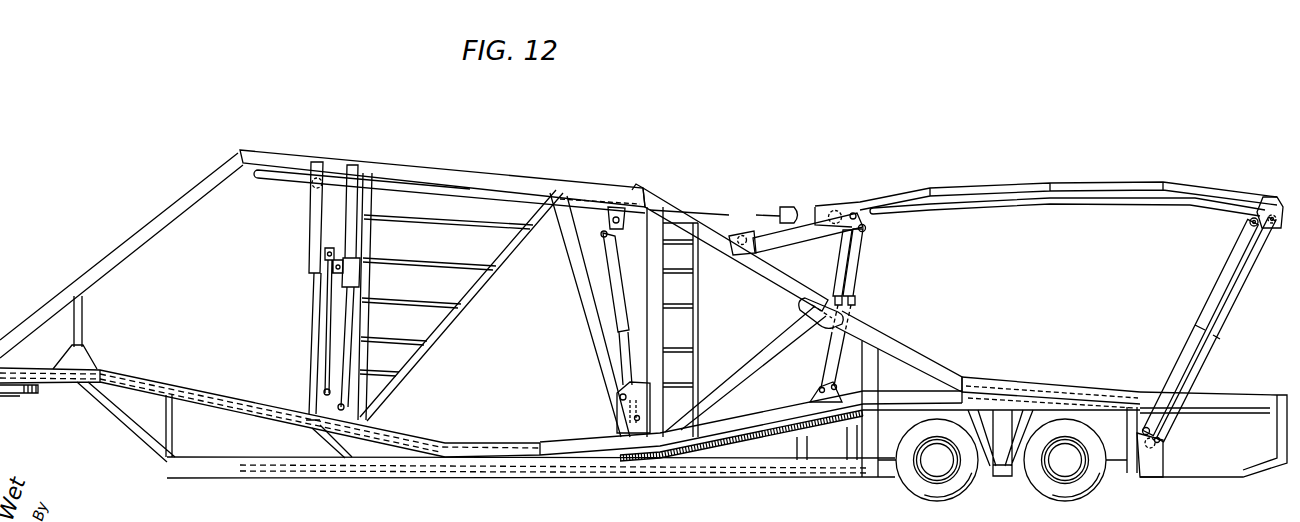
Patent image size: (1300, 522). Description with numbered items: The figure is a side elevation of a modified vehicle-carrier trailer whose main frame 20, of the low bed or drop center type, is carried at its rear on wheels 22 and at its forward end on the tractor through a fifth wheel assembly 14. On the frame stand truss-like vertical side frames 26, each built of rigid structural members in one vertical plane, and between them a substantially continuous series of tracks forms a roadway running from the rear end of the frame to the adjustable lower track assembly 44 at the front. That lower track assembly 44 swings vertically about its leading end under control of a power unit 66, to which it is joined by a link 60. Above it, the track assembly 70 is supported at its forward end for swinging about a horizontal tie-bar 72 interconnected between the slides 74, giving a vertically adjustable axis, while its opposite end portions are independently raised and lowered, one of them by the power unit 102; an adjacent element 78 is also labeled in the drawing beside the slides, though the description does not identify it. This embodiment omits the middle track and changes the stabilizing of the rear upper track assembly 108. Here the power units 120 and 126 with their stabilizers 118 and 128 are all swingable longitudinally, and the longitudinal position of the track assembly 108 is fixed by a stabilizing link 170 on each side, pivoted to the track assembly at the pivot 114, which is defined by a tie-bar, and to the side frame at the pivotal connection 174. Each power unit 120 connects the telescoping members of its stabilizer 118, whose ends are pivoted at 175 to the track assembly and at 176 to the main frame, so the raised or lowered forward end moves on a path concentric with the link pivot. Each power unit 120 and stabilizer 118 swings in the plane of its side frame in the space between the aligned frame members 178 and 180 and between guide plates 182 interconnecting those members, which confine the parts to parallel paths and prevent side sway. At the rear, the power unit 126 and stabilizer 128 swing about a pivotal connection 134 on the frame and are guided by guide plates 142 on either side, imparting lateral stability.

The fifth wheel assembly 14 is at (17, 395).
The main frame 20 is at (830, 478).
The wheels 22 is at (1043, 491).
The side frames 26 is at (685, 213).
The adjustable lower track assembly 44 is at (207, 388).
The link 60 is at (306, 401).
The power unit 66 is at (322, 312).
The track assembly 70 is at (430, 193).
The horizontal tie-bar 72 is at (318, 177).
The slides 74 is at (310, 230).
The post 78 is at (343, 326).
The power unit 102 is at (615, 350).
The rear upper track assembly 108 is at (1120, 182).
The pivot 114 is at (838, 210).
The stabilizer 118 is at (841, 296).
The power unit 120 is at (856, 303).
The power unit 126 is at (1193, 333).
The stabilizer 128 is at (1218, 336).
The pivotal connection 134 is at (1164, 442).
The guide plates 142 is at (1227, 393).
The stabilizing link 170 is at (825, 232).
The pivotal connection 174 is at (746, 236).
The pivotal connection 175 is at (856, 212).
The pivotal connection 176 is at (816, 391).
The frame member 178 is at (777, 281).
The frame member 180 is at (907, 352).
The guide plates 182 is at (826, 324).